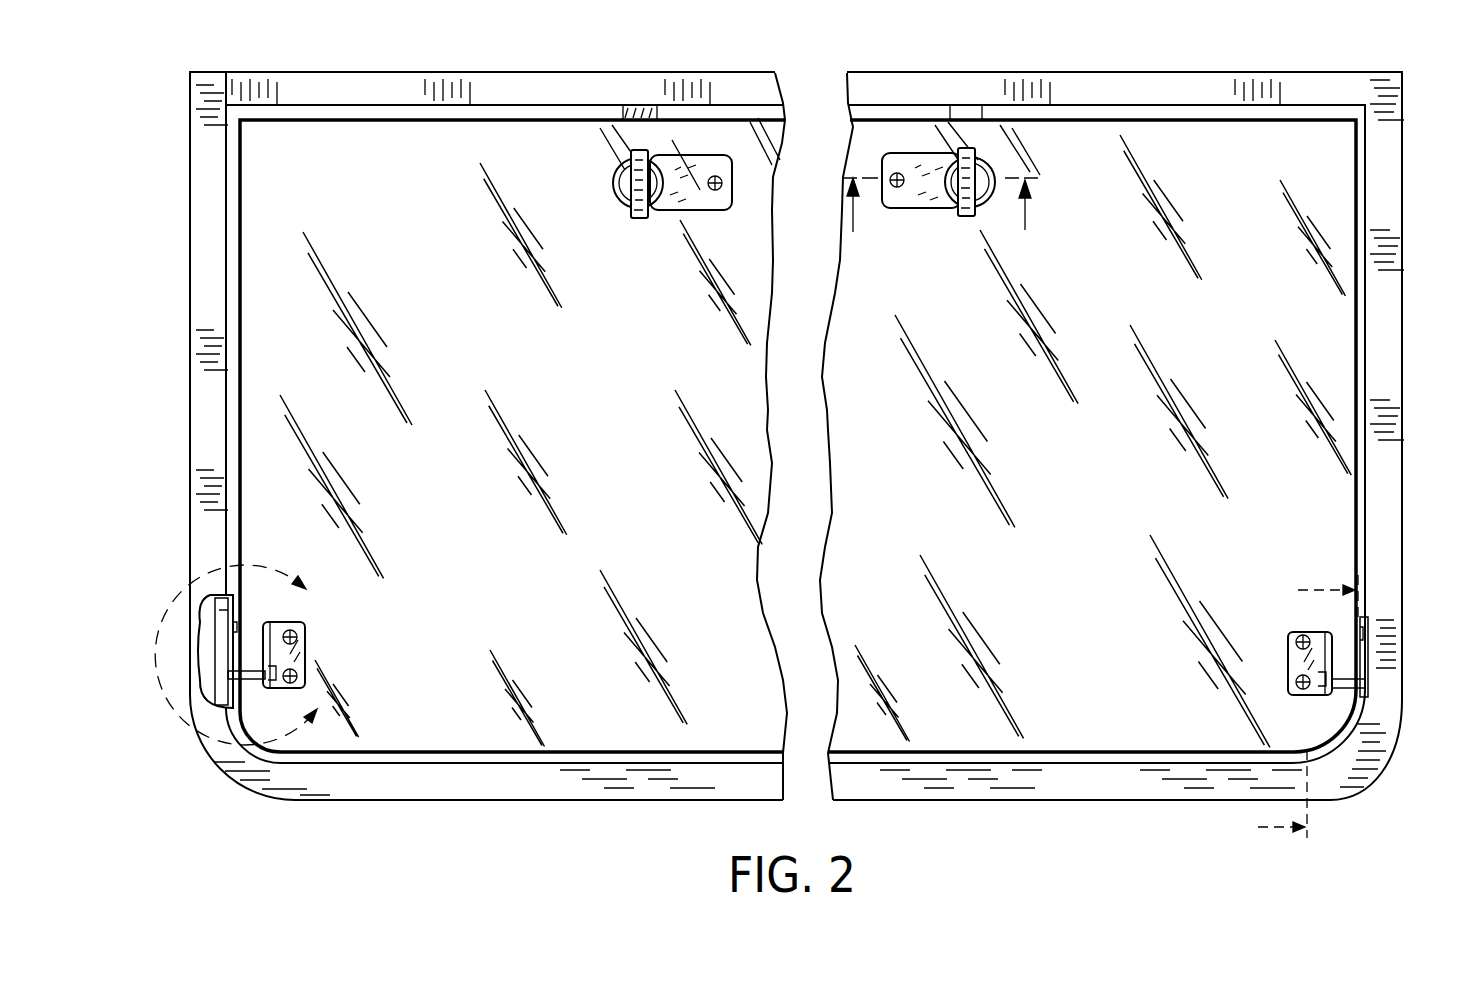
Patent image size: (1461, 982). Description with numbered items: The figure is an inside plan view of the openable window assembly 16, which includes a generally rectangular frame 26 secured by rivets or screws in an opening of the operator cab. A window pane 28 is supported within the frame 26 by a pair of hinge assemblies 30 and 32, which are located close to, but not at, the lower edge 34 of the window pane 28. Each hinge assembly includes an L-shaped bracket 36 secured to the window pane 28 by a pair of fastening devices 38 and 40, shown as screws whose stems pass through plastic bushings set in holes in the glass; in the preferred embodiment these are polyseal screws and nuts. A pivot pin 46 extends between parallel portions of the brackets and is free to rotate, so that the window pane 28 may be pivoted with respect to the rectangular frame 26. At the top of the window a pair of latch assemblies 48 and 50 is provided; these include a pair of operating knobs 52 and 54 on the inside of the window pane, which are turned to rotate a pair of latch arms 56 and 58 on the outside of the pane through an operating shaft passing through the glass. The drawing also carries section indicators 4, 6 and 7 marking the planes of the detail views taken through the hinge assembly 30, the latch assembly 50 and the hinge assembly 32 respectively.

The openable window assembly 16 is at (1218, 73).
The frame 26 is at (1387, 352).
The window pane 28 is at (1330, 504).
The hinge assembly 30 is at (213, 678).
The hinge assembly 32 is at (1368, 687).
The lower edge 34 is at (968, 752).
The L-shaped bracket 36 is at (293, 656).
The fastening device 38 is at (306, 676).
The fastening device 40 is at (306, 630).
The pivot pin 46 is at (250, 690).
The latch assembly 48 is at (661, 215).
The latch assembly 50 is at (957, 221).
The operating knob 52 is at (630, 212).
The operating knob 54 is at (985, 172).
The latch arm 56 is at (627, 142).
The latch arm 58 is at (978, 130).
The section line 4- 4 is at (242, 655).
The section line 6- 6 is at (940, 221).
The section line 7- 7 is at (1296, 709).